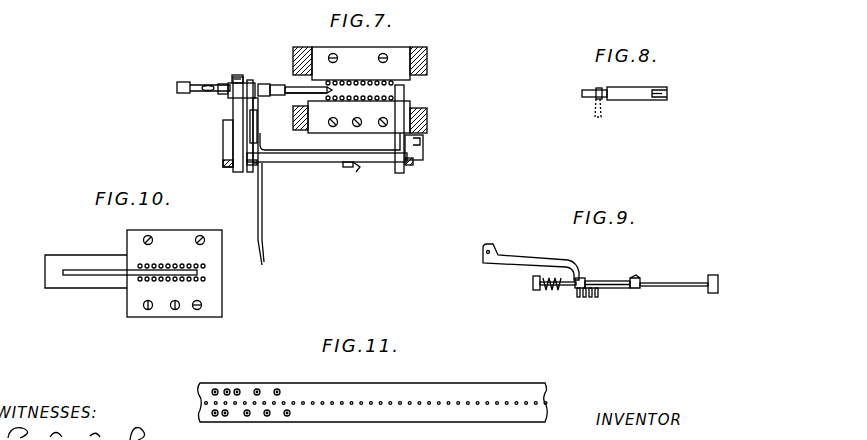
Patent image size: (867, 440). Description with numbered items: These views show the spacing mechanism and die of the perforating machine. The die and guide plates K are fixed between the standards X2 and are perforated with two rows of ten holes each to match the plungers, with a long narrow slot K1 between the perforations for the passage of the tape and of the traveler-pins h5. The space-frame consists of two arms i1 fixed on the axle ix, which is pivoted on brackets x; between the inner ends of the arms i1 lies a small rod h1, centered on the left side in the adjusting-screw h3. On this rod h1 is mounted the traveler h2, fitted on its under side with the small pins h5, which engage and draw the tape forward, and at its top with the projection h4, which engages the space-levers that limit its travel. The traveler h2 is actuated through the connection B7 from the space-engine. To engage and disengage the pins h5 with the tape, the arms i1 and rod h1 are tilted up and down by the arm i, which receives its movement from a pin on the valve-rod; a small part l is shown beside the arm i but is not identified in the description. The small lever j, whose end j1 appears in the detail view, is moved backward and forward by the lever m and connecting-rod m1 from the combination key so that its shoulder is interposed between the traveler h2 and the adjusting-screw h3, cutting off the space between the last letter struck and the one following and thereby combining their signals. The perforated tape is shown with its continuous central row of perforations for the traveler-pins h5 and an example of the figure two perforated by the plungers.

In FIG. 7, the die and guide plates K is at (364, 136).
In FIG. 10, the die and guide plates K is at (167, 309).
In FIG. 10, the slot K1 is at (115, 276).
In FIG. 7, the standards X2 is at (436, 71).
In FIG. 7, the brackets x is at (228, 153).
In FIG. 7, the arm i is at (347, 168).
In FIG. 7, the arms i1 is at (397, 177).
In FIG. 9, the arms i1 is at (555, 290).
In FIG. 7, the axle ix is at (307, 161).
In FIG. 7, the lug l is at (357, 170).
In FIG. 7, the small lever j is at (257, 118).
In FIG. 8, the small lever j is at (636, 95).
In FIG. 7, the clamp fork j1 is at (246, 78).
In FIG. 8, the clamp fork j1 is at (665, 88).
In FIG. 7, the lever m is at (252, 167).
In FIG. 8, the lever m is at (595, 112).
In FIG. 7, the connecting-rod m1 is at (263, 222).
In FIG. 7, the small rod h1 is at (298, 85).
In FIG. 9, the small rod h1 is at (721, 268).
In FIG. 7, the traveler h2 is at (310, 96).
In FIG. 9, the traveler h2 is at (609, 289).
In FIG. 7, the adjusting-screw h3 is at (225, 82).
In FIG. 9, the adjusting-screw h3 is at (536, 291).
In FIG. 9, the projection h4 is at (640, 278).
In FIG. 9, the traveler-pins h5 is at (580, 297).
In FIG. 7, the connection B7 is at (177, 87).
In FIG. 9, the connection B7 is at (518, 263).